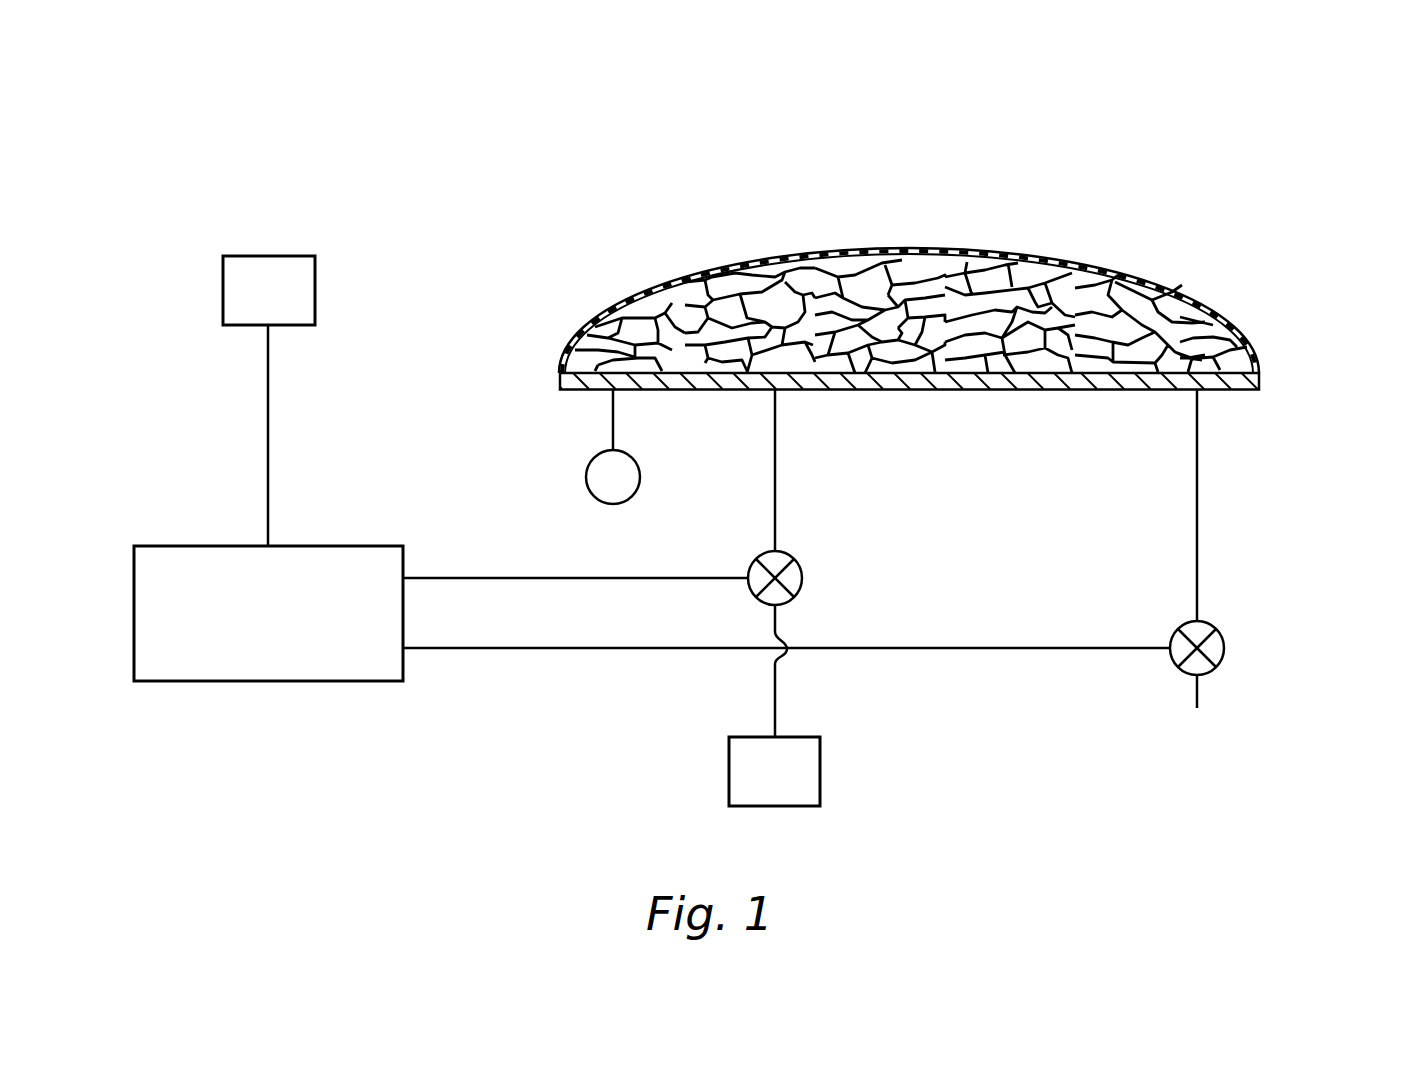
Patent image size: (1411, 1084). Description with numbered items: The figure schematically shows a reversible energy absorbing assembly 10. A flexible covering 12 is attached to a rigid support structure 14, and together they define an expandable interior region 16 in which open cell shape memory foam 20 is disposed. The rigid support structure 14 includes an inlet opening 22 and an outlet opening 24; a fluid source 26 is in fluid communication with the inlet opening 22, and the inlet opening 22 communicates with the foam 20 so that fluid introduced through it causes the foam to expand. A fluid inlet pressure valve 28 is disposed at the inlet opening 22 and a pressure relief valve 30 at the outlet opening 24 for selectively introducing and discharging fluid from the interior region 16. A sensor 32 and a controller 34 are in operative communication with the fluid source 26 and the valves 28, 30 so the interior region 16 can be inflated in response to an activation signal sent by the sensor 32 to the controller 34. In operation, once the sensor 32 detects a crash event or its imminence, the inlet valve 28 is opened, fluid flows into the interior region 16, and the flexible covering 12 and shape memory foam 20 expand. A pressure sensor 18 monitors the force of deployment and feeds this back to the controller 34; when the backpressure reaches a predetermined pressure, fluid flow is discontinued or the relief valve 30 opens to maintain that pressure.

The reversible energy absorbing assembly 10 is at (1320, 195).
The flexible covering 12 is at (1180, 295).
The rigid support structure 14 is at (933, 390).
The expandable interior region 16 is at (884, 250).
The pressure sensor 18 is at (586, 477).
The open cell shape memory foam 20 is at (682, 305).
The inlet opening 22 is at (765, 400).
The outlet opening 24 is at (1187, 400).
The fluid source 26 is at (822, 772).
The fluid inlet pressure valve 28 is at (803, 578).
The pressure relief valve 30 is at (1225, 645).
The sensor 32 is at (265, 256).
The controller 34 is at (180, 546).